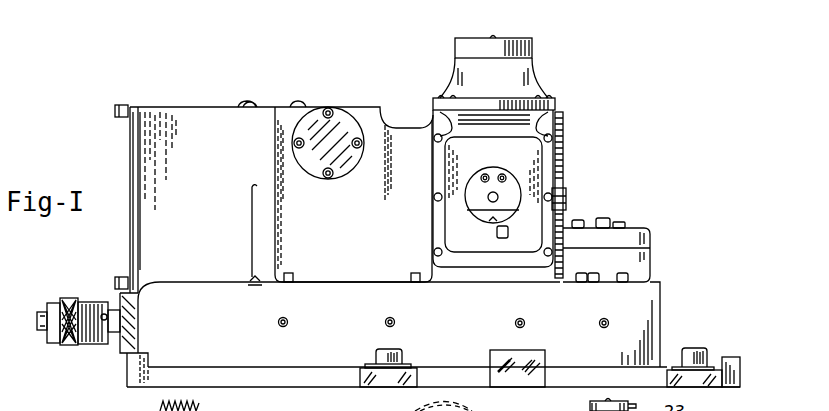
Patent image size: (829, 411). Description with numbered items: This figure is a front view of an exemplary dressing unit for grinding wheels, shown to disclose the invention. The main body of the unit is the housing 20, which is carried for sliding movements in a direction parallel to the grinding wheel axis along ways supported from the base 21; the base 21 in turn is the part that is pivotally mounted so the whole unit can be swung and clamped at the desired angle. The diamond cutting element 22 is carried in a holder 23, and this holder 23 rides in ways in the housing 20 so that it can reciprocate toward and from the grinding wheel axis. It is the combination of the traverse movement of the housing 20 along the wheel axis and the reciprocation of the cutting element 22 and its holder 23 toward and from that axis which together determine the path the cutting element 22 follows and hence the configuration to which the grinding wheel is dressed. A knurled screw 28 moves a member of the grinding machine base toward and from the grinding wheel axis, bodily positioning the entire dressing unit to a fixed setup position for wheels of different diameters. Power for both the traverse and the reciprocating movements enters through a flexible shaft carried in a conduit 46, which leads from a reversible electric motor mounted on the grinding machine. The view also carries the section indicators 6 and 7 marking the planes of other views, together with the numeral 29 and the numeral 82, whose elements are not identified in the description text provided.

The section line 6- 6 is at (468, 400).
The section line 7- 7 is at (180, 393).
The housing 20 is at (647, 302).
The base 21 is at (723, 362).
The diamond cutting element 22 is at (497, 197).
The holder 23 is at (513, 204).
The knurled screw 28 is at (375, 357).
The adjusting knob 29 is at (695, 350).
The conduit 46 is at (752, 403).
The side plate 82 is at (132, 142).